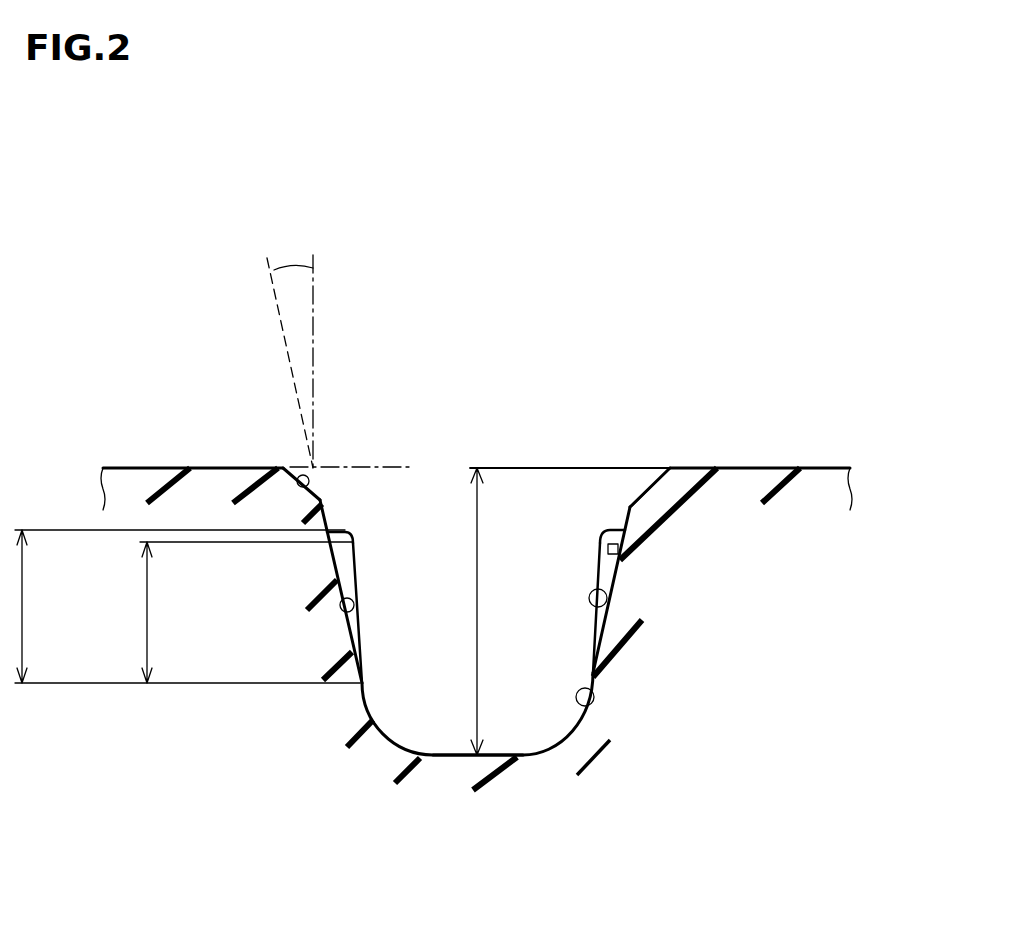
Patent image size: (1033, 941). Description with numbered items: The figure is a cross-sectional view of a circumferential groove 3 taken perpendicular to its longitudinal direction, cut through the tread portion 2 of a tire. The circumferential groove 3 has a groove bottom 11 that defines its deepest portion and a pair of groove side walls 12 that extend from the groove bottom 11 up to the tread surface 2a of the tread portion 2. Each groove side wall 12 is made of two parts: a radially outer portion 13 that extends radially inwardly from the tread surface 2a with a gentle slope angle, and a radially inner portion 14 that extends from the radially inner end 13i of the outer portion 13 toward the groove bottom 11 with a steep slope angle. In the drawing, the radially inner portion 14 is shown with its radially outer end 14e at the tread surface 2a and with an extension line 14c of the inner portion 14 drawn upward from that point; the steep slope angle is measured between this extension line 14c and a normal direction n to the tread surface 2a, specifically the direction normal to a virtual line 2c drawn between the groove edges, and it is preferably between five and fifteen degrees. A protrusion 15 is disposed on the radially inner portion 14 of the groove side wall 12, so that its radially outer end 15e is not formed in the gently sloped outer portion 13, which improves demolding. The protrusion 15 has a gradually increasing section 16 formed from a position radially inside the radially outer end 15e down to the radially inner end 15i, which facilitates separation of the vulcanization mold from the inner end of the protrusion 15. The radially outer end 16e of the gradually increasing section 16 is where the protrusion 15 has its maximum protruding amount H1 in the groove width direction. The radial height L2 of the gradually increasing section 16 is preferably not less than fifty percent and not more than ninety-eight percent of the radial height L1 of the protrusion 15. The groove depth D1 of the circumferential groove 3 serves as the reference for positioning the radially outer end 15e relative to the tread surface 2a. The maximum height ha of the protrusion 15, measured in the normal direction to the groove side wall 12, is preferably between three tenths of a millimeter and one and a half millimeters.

The tread portion 2 is at (781, 323).
The tread surface 2a is at (143, 468).
The virtual line 2c is at (390, 467).
The circumferential groove 3 is at (460, 520).
The groove bottom 11 is at (493, 757).
The groove side wall 12 is at (242, 563).
The radially outer portion 13 is at (318, 495).
The radially inner end 13i is at (322, 497).
The radially inner portion 14 is at (347, 607).
The extension line of rake surface 14c is at (277, 302).
The outer edge of rake surface 14e is at (313, 468).
The protrusion 15 is at (360, 622).
The radially outer end 15e is at (648, 505).
The radially inner end 15i is at (586, 712).
The gradually increasing section 16 is at (130, 548).
The radially outer end 16e is at (347, 545).
The maximum height ha is at (600, 552).
The normal direction n is at (315, 287).
The radial height L1 is at (184, 606).
The radial height L2 is at (241, 612).
The groove depth D1 is at (477, 695).
The maximum protruding amount H1 is at (357, 573).